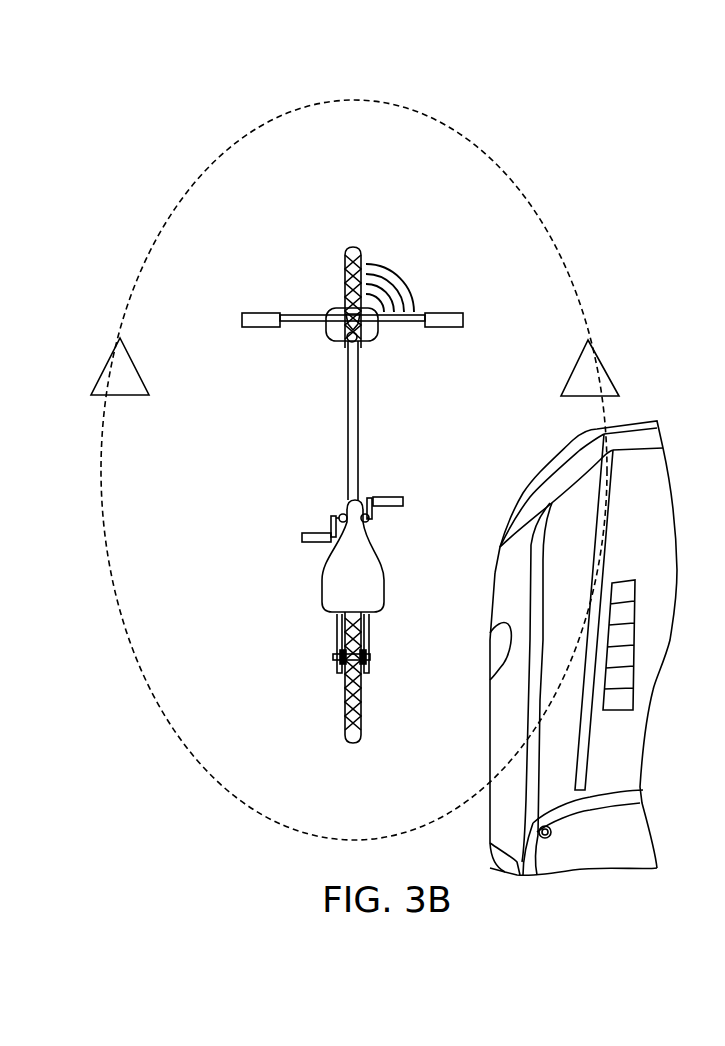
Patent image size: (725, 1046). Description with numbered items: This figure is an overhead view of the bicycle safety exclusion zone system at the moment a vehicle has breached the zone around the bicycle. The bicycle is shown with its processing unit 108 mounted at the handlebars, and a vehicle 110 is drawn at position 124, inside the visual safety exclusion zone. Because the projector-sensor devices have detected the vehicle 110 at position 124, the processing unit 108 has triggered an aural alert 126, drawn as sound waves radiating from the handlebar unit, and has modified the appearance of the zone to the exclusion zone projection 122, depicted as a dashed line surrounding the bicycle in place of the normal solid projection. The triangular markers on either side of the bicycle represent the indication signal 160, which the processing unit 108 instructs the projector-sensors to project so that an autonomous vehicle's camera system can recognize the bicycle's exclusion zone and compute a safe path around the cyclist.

The processing unit 108 is at (338, 308).
The vehicle 110 is at (554, 643).
The exclusion zone projection 122 is at (527, 172).
The position 124 is at (525, 470).
The aural alert 126 is at (410, 278).
The indication signal 160 is at (103, 383).